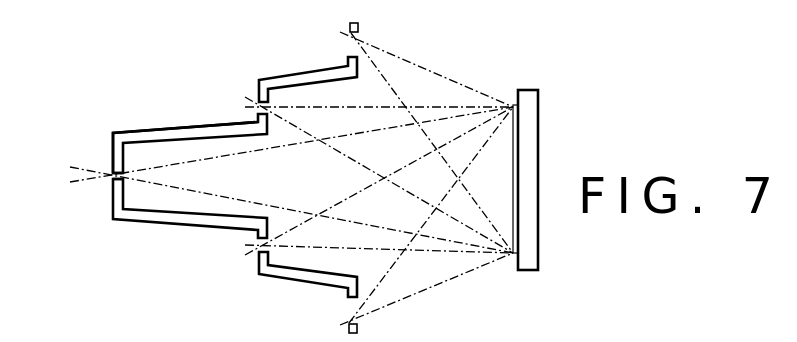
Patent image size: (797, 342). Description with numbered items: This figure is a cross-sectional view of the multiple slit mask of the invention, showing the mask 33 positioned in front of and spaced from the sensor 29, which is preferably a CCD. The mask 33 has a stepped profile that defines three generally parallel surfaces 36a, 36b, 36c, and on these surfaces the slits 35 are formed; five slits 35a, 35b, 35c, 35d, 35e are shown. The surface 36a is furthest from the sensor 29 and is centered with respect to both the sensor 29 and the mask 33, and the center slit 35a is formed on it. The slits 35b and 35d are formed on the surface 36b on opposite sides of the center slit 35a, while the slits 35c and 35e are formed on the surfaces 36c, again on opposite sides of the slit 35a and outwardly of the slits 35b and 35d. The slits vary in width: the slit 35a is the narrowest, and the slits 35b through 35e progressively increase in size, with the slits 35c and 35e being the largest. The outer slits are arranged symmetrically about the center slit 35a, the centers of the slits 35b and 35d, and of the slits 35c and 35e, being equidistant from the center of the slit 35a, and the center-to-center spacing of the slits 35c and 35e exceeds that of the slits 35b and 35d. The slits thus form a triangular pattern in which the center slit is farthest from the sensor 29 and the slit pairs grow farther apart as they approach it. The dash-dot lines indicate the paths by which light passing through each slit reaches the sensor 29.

The sensor 29 is at (541, 94).
The mask 33 is at (165, 226).
The slits 35 is at (110, 170).
The center slit 35a is at (112, 176).
The slit 35b is at (262, 108).
The slit 35c is at (352, 40).
The slit 35d is at (258, 244).
The slit 35e is at (343, 316).
The surface 36a is at (111, 153).
The surface 36b is at (259, 86).
The surface 36c is at (350, 28).